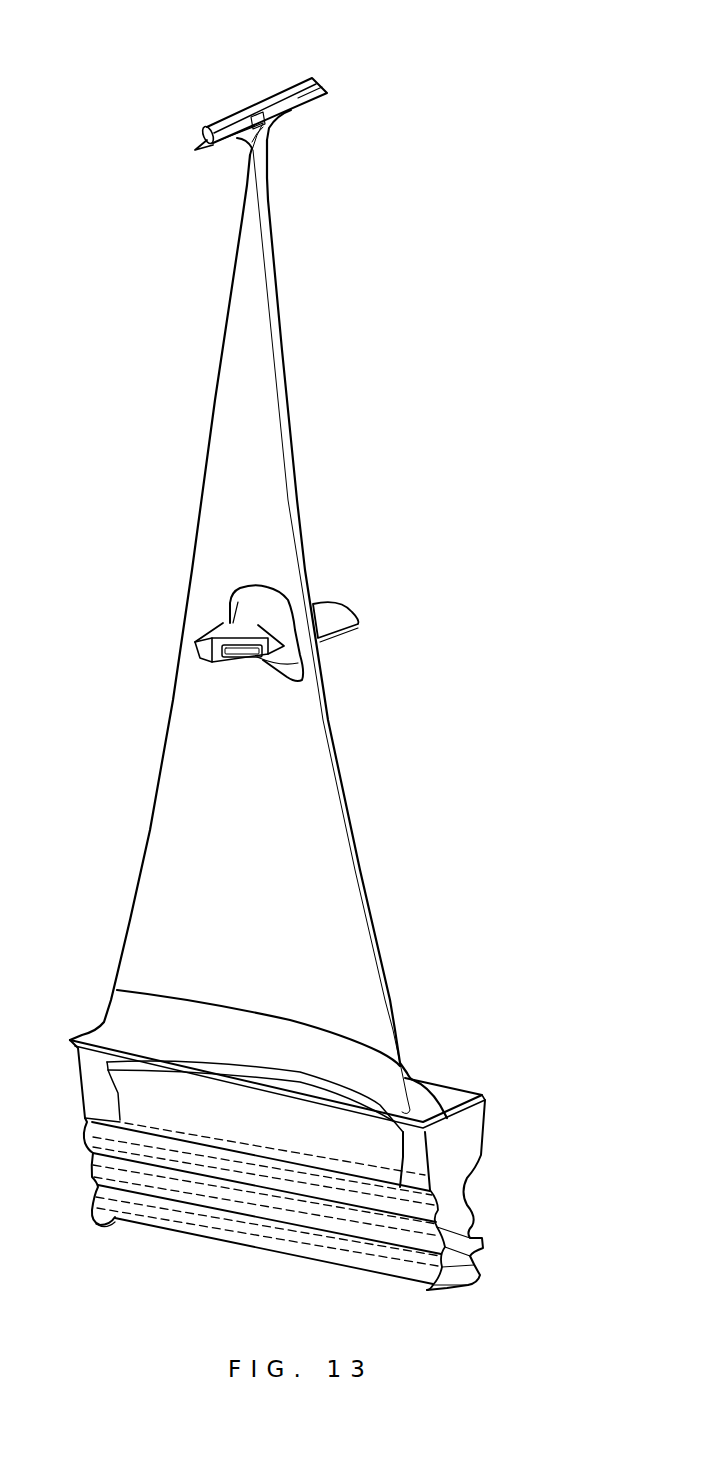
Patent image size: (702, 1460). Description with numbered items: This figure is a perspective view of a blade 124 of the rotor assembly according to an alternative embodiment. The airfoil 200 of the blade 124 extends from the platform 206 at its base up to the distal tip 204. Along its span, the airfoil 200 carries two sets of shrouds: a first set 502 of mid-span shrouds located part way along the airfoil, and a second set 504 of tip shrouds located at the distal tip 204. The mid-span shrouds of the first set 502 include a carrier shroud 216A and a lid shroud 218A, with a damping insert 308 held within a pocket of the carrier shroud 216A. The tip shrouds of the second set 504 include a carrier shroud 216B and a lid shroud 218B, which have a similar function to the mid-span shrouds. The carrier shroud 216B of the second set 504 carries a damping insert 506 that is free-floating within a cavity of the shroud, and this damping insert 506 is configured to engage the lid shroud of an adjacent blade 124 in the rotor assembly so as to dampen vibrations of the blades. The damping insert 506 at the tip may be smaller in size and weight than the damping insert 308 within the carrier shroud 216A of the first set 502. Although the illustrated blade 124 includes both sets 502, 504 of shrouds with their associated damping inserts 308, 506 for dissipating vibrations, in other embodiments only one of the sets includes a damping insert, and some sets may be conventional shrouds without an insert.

The blade 124 is at (108, 302).
The airfoil 200 is at (278, 406).
The distal tip 204 is at (248, 80).
The platform 206 is at (470, 1133).
The carrier shroud 216A is at (222, 630).
The carrier shroud 216B is at (220, 117).
The lid shroud 218A is at (368, 583).
The lid shroud 218B is at (295, 93).
The damping insert 308 is at (238, 663).
The first set of mid-span shrouds 502 is at (222, 570).
The second set of tip shrouds 504 is at (302, 128).
The damping insert 506 is at (200, 152).